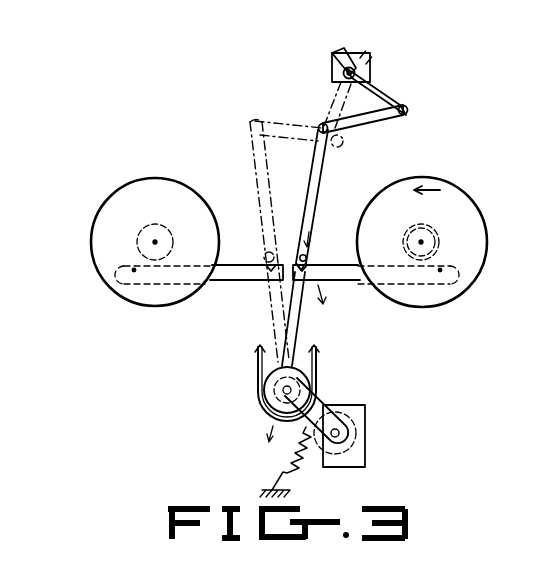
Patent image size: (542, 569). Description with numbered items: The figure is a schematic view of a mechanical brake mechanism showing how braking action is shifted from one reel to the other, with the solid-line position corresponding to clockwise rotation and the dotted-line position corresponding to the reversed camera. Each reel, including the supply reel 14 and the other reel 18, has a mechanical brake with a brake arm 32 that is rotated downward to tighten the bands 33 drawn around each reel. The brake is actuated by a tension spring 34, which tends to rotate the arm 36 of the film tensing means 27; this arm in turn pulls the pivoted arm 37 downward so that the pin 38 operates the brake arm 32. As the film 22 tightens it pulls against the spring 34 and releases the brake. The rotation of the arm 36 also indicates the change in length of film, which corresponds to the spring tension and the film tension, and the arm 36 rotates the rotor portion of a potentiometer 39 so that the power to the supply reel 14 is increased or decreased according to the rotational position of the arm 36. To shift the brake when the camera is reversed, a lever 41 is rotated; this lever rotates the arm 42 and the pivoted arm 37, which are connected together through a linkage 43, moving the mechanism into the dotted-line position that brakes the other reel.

The supply reel 14 is at (462, 200).
The wheel 18 is at (120, 196).
The film 22 is at (318, 356).
The film tensing means 27 is at (352, 366).
The brake arm 32 is at (233, 282).
The bands 33 is at (135, 256).
The tension spring 34 is at (284, 464).
The arm 36 is at (326, 412).
The pivoted arm 37 is at (323, 180).
The pin 38 is at (306, 257).
The potentiometer 39 is at (352, 432).
The lever 41 is at (340, 52).
The arm 42 is at (378, 86).
The linkage 43 is at (384, 120).